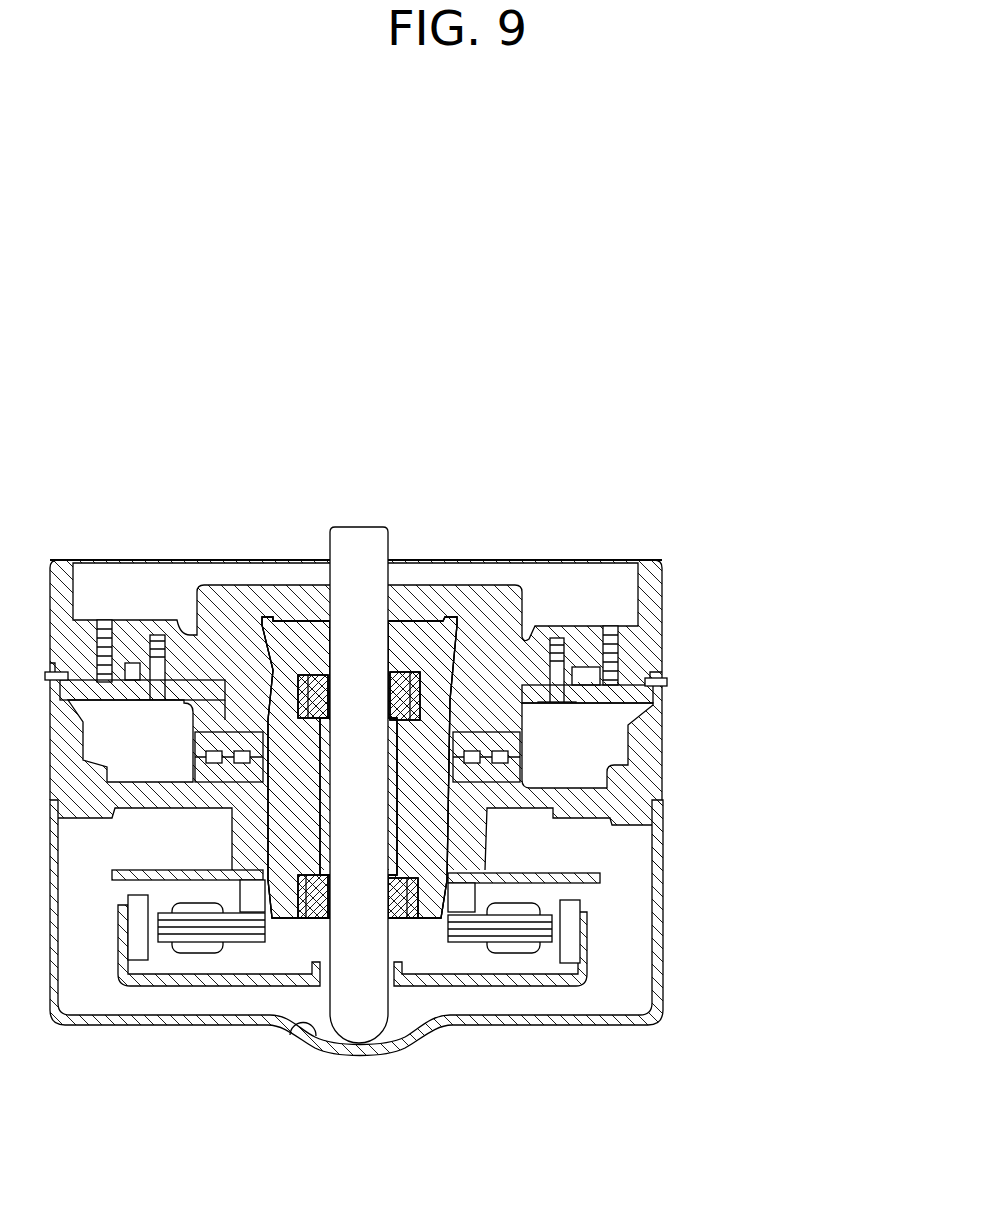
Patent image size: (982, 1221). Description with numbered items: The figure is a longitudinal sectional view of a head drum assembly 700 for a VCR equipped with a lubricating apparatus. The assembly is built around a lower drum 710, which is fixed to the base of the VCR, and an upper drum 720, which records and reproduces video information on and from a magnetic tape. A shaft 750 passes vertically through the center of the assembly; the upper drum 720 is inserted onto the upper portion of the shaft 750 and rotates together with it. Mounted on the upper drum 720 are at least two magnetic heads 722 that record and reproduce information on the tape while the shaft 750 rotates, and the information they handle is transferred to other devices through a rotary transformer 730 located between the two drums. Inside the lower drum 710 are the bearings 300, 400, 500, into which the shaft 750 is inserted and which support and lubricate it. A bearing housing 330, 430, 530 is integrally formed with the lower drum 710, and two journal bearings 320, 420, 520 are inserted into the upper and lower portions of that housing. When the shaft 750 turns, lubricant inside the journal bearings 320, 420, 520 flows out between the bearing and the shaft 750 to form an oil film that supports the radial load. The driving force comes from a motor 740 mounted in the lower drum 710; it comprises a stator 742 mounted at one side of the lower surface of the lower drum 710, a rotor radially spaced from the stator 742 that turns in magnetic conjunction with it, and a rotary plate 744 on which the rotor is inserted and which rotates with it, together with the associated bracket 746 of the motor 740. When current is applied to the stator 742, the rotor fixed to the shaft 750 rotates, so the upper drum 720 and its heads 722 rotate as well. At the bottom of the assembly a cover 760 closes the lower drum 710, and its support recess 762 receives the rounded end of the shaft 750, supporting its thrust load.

The head drum assembly 700 is at (390, 325).
The bearing 300 is at (543, 447).
The bearing 400 is at (357, 658).
The bearing 500 is at (357, 658).
The bearing housing 330 is at (289, 693).
The bearing housing 430 is at (225, 683).
The bearing housing 530 is at (225, 683).
The journal bearing 320 is at (401, 690).
The journal bearing 420 is at (475, 683).
The journal bearing 520 is at (475, 683).
The upper drum 720 is at (653, 637).
The magnetic head 722 is at (668, 681).
The rotary transformer 730 is at (525, 751).
The lower drum 710 is at (652, 790).
The motor 740 is at (484, 958).
The rotary plate 744 is at (572, 915).
The stator 742 is at (553, 935).
The bracket 746 is at (590, 967).
The shaft 750 is at (388, 1003).
The cover 760 is at (535, 1028).
The support recess 762 is at (290, 1037).